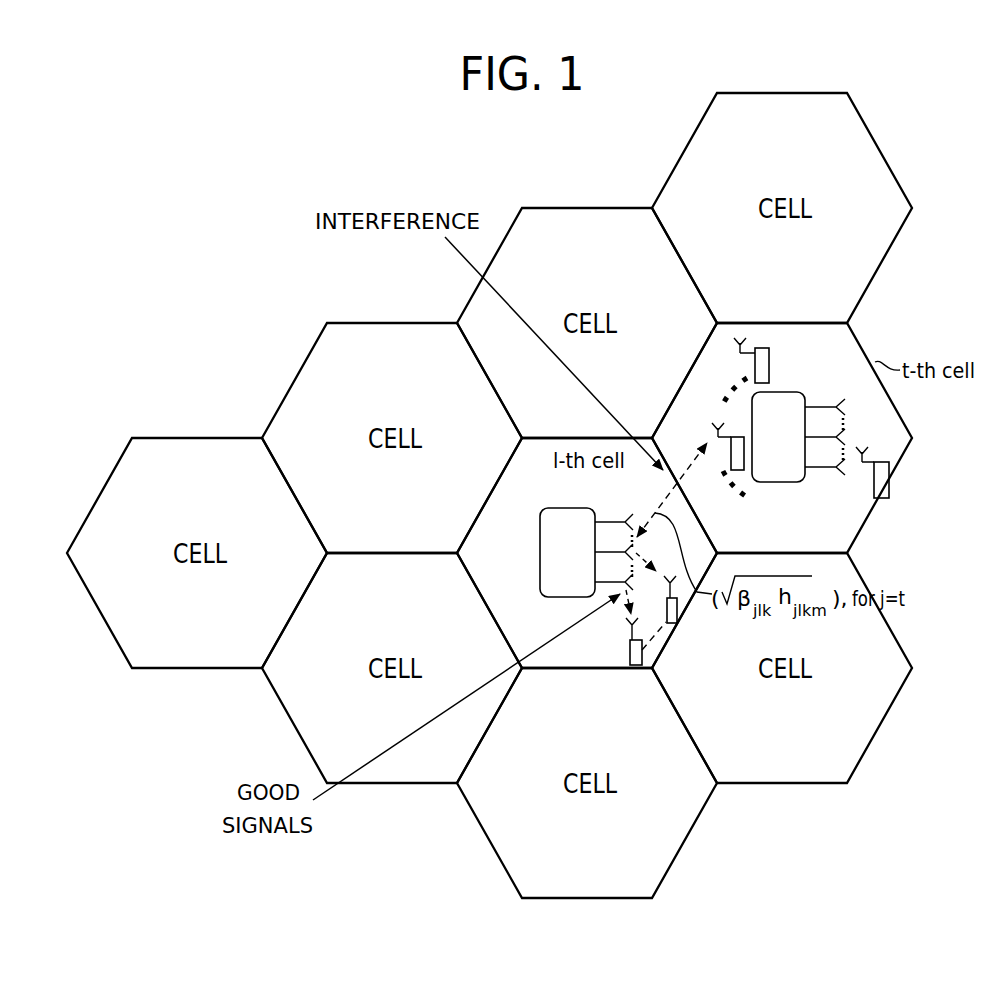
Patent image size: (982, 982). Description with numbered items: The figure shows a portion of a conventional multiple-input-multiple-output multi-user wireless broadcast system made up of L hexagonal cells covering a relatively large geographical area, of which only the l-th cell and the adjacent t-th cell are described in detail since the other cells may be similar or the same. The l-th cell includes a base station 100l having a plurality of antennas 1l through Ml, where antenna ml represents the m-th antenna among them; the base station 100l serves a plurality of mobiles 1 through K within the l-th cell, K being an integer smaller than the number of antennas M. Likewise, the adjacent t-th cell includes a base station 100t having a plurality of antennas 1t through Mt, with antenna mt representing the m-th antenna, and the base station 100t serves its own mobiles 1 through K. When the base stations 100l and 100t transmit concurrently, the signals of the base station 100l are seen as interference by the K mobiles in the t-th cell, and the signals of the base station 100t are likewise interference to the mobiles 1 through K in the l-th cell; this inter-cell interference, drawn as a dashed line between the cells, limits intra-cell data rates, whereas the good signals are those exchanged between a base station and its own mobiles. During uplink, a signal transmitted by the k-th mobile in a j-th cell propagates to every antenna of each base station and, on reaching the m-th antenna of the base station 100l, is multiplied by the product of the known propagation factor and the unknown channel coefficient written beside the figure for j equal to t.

The first mobile 1 is at (769, 355).
The K-th mobile K is at (632, 688).
The base station of the t-th cell 100t is at (777, 482).
The base station of the l-th cell 100l is at (567, 553).
The first antenna of base station 100t 1t is at (825, 399).
The m-th antenna of base station 100t mt is at (825, 427).
The M-th antenna of base station 100t Mt is at (825, 458).
The first antenna of base station 100l 1l is at (614, 512).
The m-th antenna of base station 100l ml is at (614, 541).
The M-th antenna of base station 100l Ml is at (614, 572).